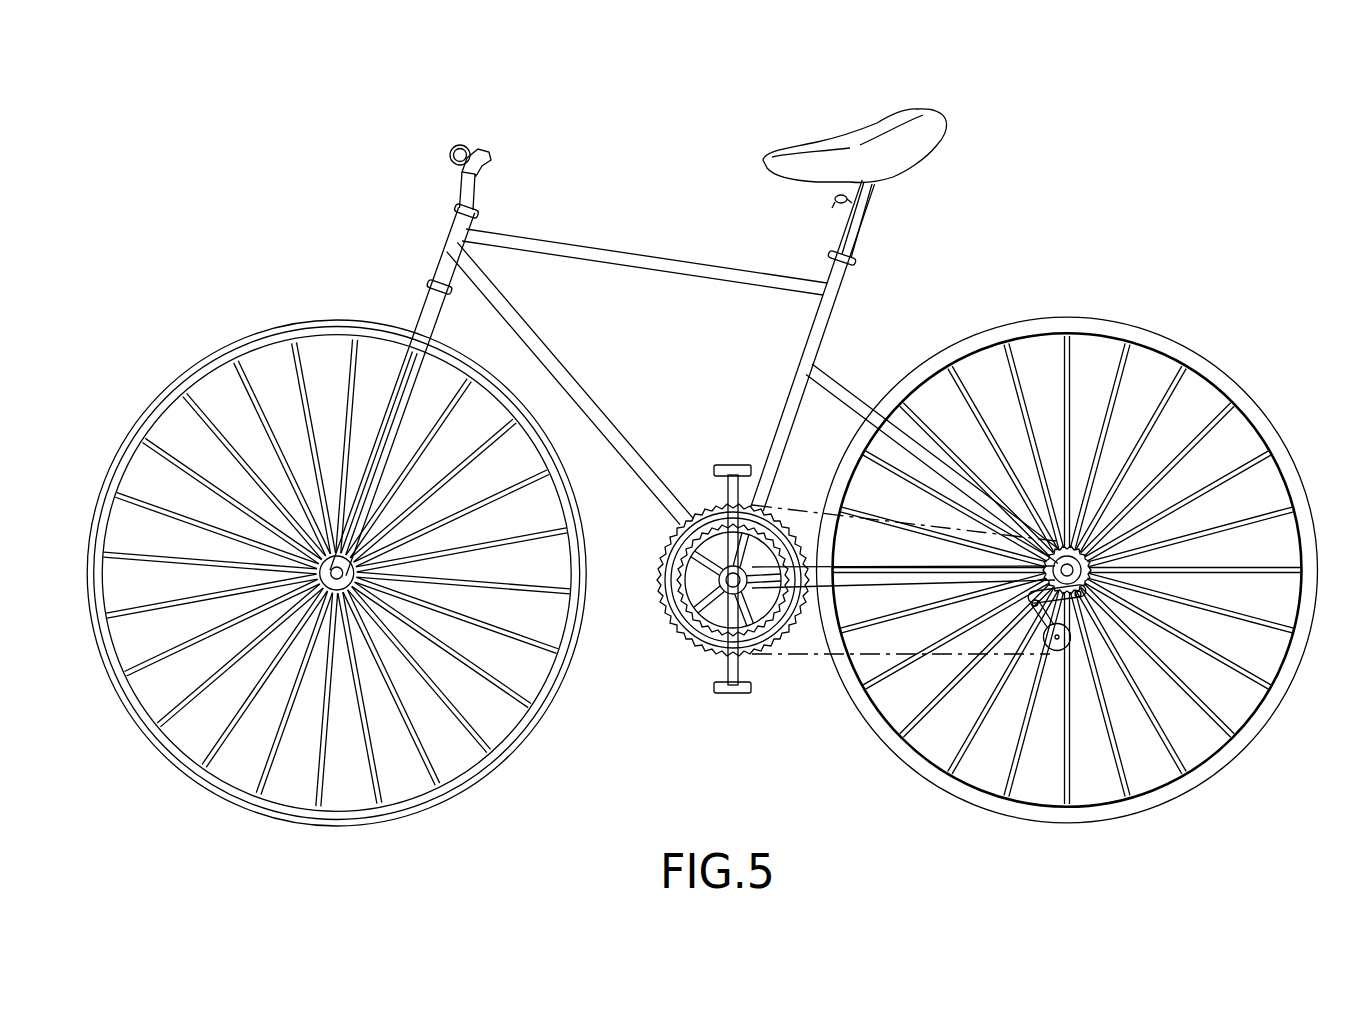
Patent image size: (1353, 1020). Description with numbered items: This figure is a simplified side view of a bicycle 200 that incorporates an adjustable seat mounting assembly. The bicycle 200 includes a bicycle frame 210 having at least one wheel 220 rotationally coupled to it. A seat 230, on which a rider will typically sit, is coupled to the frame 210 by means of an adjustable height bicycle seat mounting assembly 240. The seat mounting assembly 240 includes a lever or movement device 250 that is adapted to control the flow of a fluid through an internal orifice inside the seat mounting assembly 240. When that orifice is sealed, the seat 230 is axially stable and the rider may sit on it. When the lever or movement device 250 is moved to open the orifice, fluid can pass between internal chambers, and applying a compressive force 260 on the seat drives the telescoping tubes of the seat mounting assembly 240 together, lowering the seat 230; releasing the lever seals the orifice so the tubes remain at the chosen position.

The bicycle 200 is at (346, 67).
The bicycle frame 210 is at (520, 243).
The wheel 220 is at (486, 770).
The seat 230 is at (932, 127).
The adjustable height bicycle seat mounting assembly 240 is at (915, 241).
The lever or movement device 250 is at (838, 202).
The compressive force 260 is at (918, 84).